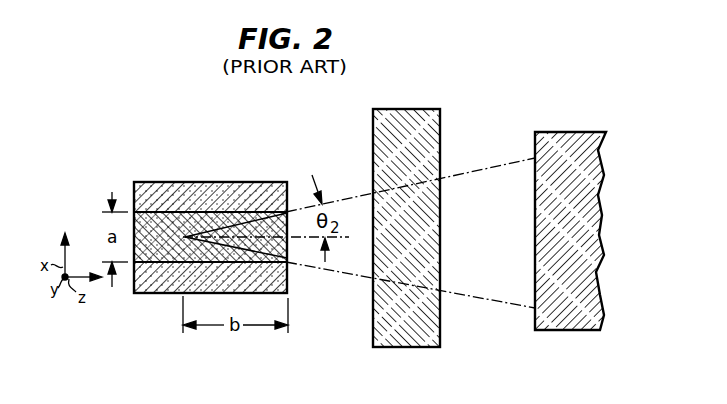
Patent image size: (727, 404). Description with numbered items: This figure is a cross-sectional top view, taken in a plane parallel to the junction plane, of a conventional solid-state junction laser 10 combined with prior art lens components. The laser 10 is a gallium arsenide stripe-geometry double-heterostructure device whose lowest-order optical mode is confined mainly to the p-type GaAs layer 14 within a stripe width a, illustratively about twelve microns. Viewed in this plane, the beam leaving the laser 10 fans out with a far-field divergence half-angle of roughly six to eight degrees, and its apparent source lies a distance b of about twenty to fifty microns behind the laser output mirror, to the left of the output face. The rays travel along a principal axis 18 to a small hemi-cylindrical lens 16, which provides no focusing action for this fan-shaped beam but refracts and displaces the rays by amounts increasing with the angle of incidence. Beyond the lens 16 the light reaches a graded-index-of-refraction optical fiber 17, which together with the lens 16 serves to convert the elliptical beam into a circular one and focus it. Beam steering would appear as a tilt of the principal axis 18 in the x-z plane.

The solid-state junction laser 10 is at (240, 160).
The p-type GaAs layer 14 is at (190, 217).
The hemi-cylindrical lens 16 is at (410, 108).
The graded-index-of-refraction optical fiber 17 is at (574, 131).
The principal axis 18 is at (337, 238).